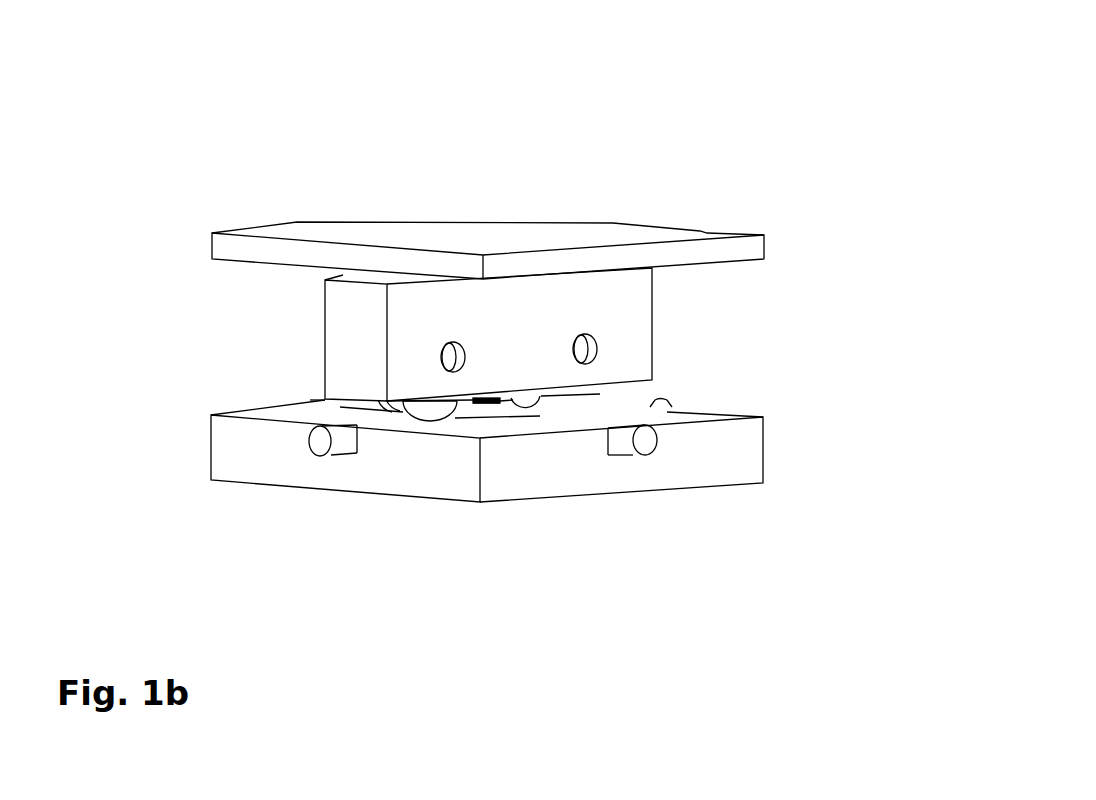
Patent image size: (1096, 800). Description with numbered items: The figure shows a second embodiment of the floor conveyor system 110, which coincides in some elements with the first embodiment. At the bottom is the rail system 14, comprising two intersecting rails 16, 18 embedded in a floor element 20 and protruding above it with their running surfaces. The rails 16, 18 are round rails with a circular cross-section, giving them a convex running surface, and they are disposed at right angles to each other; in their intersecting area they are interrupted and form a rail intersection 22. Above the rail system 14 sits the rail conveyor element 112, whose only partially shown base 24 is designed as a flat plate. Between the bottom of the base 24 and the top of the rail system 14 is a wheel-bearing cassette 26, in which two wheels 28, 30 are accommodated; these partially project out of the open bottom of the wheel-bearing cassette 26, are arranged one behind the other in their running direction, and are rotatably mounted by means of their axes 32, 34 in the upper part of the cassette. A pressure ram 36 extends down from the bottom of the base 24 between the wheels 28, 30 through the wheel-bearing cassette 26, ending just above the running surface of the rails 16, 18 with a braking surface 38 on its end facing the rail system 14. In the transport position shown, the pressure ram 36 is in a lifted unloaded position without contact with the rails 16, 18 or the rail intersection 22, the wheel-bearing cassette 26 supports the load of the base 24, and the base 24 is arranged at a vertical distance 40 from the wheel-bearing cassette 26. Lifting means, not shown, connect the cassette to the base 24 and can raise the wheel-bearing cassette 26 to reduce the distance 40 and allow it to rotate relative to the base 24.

The floor conveyor system 110 is at (810, 125).
The rail conveyor element 112 is at (758, 308).
The rail system 14 is at (160, 436).
The vertical distance 40 is at (312, 274).
The base 24 is at (392, 236).
The wheel-bearing cassette 26 is at (587, 293).
The axis 34 is at (441, 357).
The axis 32 is at (597, 349).
The floor element 20 is at (578, 477).
The rail 18 is at (322, 402).
The rail 16 is at (660, 403).
The wheel 30 is at (430, 420).
The wheel 28 is at (545, 397).
The braking surface 38 is at (497, 403).
The pressure ram 36 is at (492, 403).
The rail intersection 22 is at (470, 408).